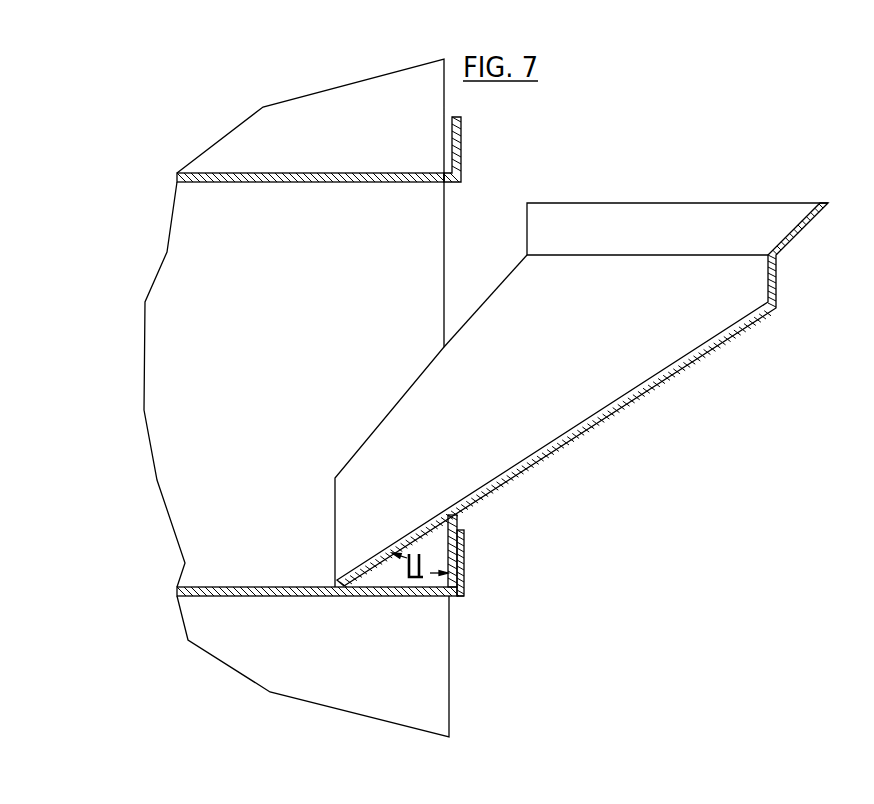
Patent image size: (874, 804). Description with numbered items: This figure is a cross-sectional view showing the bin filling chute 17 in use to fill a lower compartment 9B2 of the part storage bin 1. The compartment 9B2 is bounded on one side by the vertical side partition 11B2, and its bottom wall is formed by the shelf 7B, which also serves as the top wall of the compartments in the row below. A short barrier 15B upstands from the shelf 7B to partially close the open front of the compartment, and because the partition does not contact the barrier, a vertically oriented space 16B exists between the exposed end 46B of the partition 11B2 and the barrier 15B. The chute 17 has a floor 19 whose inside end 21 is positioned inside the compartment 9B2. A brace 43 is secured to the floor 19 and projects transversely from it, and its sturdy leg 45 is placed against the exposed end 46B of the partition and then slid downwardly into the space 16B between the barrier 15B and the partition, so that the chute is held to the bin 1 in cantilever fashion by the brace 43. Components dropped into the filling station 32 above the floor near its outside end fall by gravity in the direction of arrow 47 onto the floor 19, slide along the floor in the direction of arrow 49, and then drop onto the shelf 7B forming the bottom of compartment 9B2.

The part storage bin 1 is at (300, 81).
The shelf 7B is at (292, 593).
The compartment 9B2 is at (317, 245).
The side partition 11B2 is at (242, 401).
The barrier 15B is at (464, 567).
The space 16B is at (464, 580).
The bin filling chute 17 is at (680, 193).
The floor 19 is at (690, 362).
The inside end 21 is at (328, 582).
The filling station 32 is at (732, 225).
The brace 43 is at (494, 503).
The leg 45 is at (453, 542).
The exposed end 46B is at (446, 230).
The arrow 47 is at (616, 167).
The arrow 49 is at (468, 464).